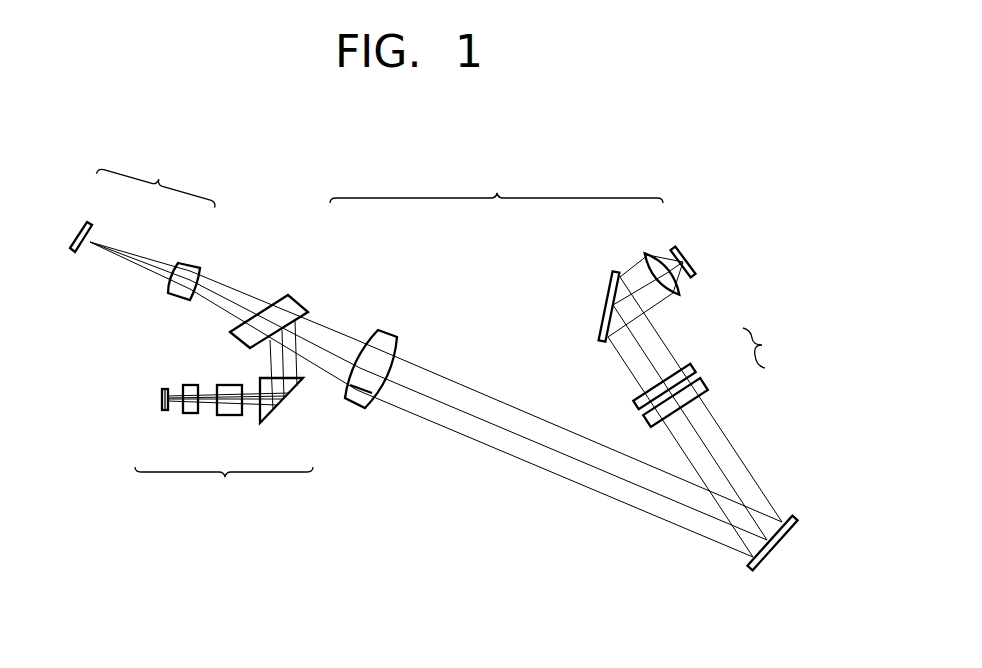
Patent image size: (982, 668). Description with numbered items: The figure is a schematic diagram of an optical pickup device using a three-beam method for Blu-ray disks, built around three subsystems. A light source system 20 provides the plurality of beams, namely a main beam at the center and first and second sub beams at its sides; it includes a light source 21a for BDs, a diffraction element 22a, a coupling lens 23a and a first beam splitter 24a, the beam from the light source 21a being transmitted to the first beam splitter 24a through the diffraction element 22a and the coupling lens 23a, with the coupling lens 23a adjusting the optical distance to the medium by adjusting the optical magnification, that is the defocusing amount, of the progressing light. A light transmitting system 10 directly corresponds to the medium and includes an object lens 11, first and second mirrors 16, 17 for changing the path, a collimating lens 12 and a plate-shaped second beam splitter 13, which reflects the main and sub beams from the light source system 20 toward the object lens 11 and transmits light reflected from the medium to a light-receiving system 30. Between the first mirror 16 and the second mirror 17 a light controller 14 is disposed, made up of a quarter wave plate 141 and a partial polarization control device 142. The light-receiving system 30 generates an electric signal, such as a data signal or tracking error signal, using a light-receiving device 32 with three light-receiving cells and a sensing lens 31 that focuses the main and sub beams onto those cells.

The light transmitting system 10 is at (496, 184).
The object lens 11 is at (647, 253).
The collimating lens 12 is at (387, 338).
The second beam splitter 13 is at (293, 303).
The light controller 14 is at (766, 348).
The ¼ wave plate (QWP) 141 is at (692, 365).
The partial polarization control device 142 is at (708, 390).
The first mirror 16 is at (792, 518).
The second mirror 17 is at (608, 307).
The light source system 20 is at (224, 485).
The light source 21a is at (162, 410).
The diffraction element 22a is at (190, 413).
The coupling lens 23a is at (235, 417).
The first beam splitter 24a is at (277, 408).
The light-receiving system 30 is at (157, 179).
The sensing lens 31 is at (193, 265).
The light-receiving device 32 is at (87, 220).